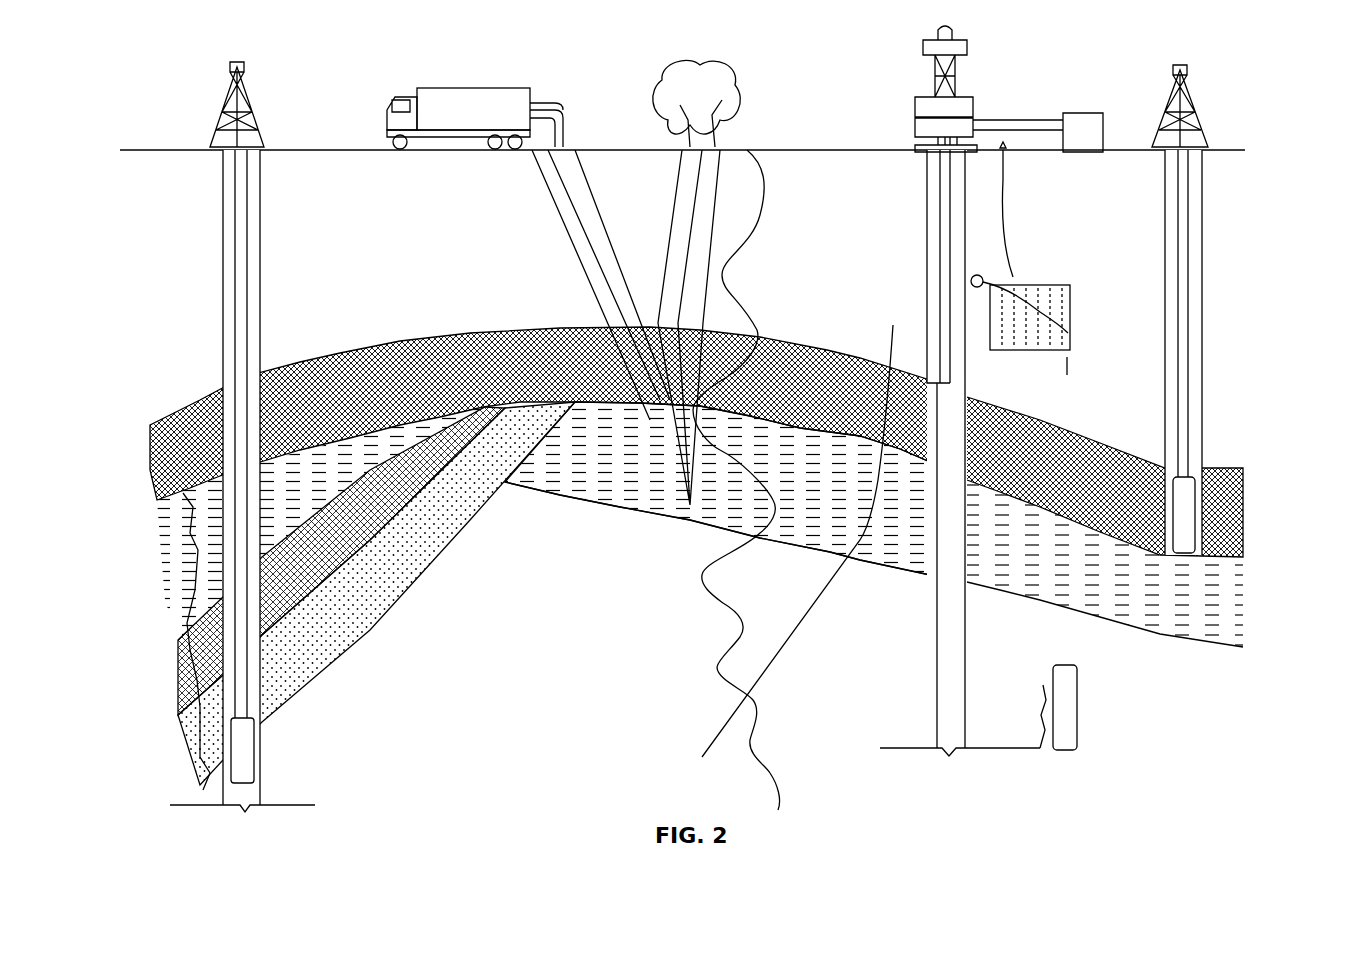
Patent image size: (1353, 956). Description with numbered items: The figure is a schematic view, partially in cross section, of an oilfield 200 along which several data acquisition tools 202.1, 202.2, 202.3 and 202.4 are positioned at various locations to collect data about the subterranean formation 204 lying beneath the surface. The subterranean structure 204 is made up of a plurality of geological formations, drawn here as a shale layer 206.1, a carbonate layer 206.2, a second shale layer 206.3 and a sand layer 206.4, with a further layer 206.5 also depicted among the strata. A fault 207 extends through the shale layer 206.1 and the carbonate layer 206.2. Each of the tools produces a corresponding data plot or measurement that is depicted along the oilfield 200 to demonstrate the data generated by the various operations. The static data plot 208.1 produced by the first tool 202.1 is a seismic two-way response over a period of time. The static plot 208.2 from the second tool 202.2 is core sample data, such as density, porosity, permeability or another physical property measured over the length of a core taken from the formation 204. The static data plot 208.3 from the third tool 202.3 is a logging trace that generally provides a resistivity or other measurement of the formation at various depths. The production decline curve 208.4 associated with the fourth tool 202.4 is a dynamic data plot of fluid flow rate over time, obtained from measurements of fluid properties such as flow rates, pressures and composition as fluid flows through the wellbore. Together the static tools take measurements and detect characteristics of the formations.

The oilfield 200 is at (1150, 78).
The data acquisition tool 202.1 is at (447, 90).
The data acquisition tool 202.2 is at (1200, 517).
The data acquisition tool 202.3 is at (256, 750).
The data acquisition tool 202.4 is at (975, 437).
The subterranean formation 204 is at (874, 564).
The shale layer 206.1 is at (696, 442).
The carbonate layer 206.2 is at (700, 527).
The shale layer 206.3 is at (341, 561).
The sand layer 206.4 is at (376, 593).
The formation layer 206.5 is at (717, 488).
The fault 207 is at (893, 325).
The static data plot 208.1 is at (730, 640).
The static data plot 208.2 is at (1043, 685).
The static data plot 208.3 is at (195, 557).
The production decline curve 208.4 is at (1034, 355).